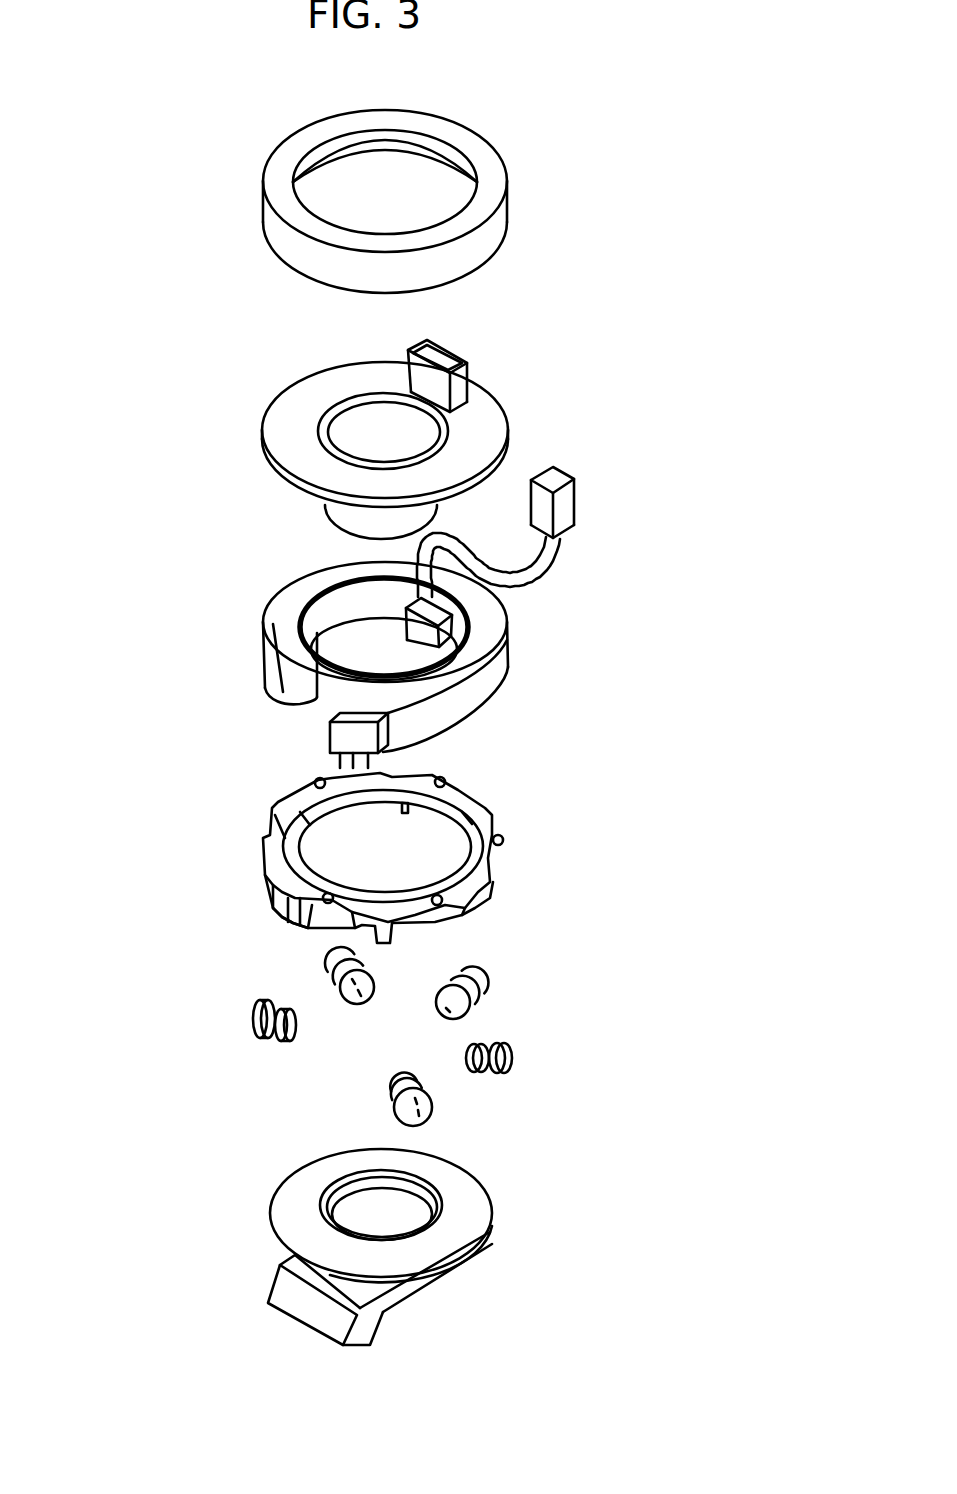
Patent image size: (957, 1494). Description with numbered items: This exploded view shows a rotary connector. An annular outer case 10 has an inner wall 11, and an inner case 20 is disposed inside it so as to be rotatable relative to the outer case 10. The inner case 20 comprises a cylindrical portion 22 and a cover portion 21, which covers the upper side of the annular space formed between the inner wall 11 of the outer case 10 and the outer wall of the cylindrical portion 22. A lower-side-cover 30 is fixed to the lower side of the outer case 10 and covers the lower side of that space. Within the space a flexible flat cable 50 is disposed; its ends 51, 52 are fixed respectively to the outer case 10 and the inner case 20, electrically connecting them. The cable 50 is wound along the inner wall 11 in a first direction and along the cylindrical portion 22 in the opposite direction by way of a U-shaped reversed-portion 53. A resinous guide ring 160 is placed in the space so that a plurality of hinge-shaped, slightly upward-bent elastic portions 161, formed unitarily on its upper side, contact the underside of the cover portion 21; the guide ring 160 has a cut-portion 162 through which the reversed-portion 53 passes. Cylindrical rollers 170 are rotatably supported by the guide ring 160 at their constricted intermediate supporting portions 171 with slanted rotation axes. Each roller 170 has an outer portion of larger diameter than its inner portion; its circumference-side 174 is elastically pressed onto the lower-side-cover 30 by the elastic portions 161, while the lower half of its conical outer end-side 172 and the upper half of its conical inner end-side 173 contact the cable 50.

The annular outer case 10 is at (500, 222).
The inner wall 11 is at (413, 146).
The inner case 20 is at (302, 468).
The cover portion 21 is at (268, 424).
The cylindrical portion 22 is at (330, 513).
The lower-side-cover 30 is at (480, 1265).
The flexible flat cable 50 is at (265, 665).
The end of the cable 51 is at (323, 733).
The end of the cable 52 is at (418, 637).
The U-shaped reversed-portion 53 is at (300, 687).
The guide ring 160 is at (352, 830).
The elastic portions 161 is at (445, 785).
The cut-portion 162 is at (280, 902).
The cylindrical rollers 170 is at (352, 1038).
The constricted intermediate supporting portion 171 is at (270, 1020).
The outer end-side 172 is at (257, 1007).
The inner end-side 173 is at (277, 1038).
The circumference-side 174 is at (255, 1032).